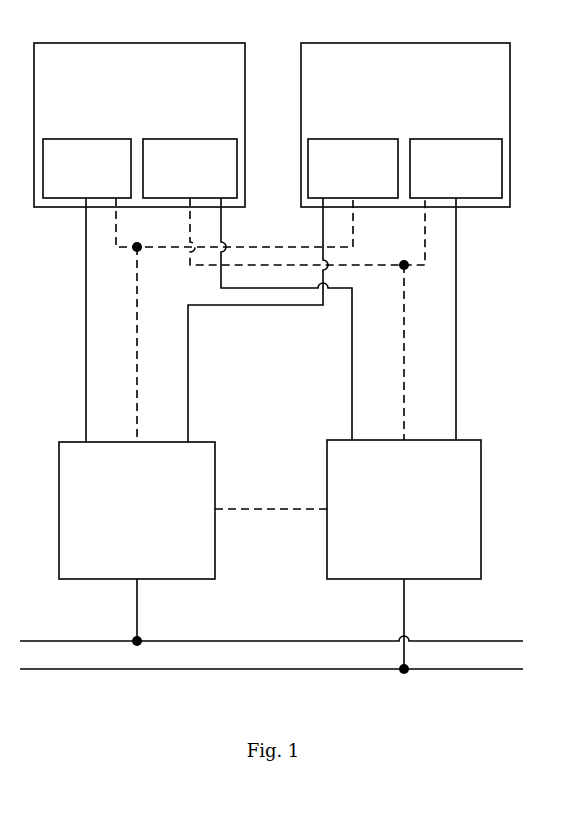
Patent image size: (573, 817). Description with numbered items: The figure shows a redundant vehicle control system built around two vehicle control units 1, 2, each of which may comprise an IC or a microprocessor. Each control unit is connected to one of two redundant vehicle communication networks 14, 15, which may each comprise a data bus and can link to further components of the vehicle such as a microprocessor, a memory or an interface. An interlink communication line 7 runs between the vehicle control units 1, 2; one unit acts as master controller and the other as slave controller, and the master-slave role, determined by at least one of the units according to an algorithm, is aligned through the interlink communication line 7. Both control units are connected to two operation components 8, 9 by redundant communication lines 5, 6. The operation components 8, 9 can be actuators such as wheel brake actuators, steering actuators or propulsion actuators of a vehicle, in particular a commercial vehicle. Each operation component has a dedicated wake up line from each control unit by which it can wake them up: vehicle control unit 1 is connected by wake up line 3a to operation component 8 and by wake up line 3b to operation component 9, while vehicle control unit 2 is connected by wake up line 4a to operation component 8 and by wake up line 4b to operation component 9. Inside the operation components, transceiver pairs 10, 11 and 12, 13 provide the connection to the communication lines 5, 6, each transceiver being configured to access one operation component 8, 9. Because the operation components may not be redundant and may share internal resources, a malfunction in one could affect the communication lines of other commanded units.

The vehicle control unit 1 is at (202, 479).
The vehicle control unit 2 is at (468, 478).
The wake up line 3a is at (85, 423).
The wake up line 3b is at (189, 423).
The wake up line 4a is at (352, 430).
The wake up line 4b is at (457, 428).
The communication line 5 is at (135, 423).
The communication line 6 is at (402, 430).
The interlink communication line 7 is at (250, 509).
The operation component 8 is at (140, 68).
The operation component 9 is at (407, 70).
The transceiver 10 is at (53, 167).
The transceiver 11 is at (150, 167).
The transceiver 12 is at (320, 167).
The transceiver 13 is at (416, 167).
The vehicle communication network 14 is at (246, 637).
The vehicle communication network 15 is at (280, 667).